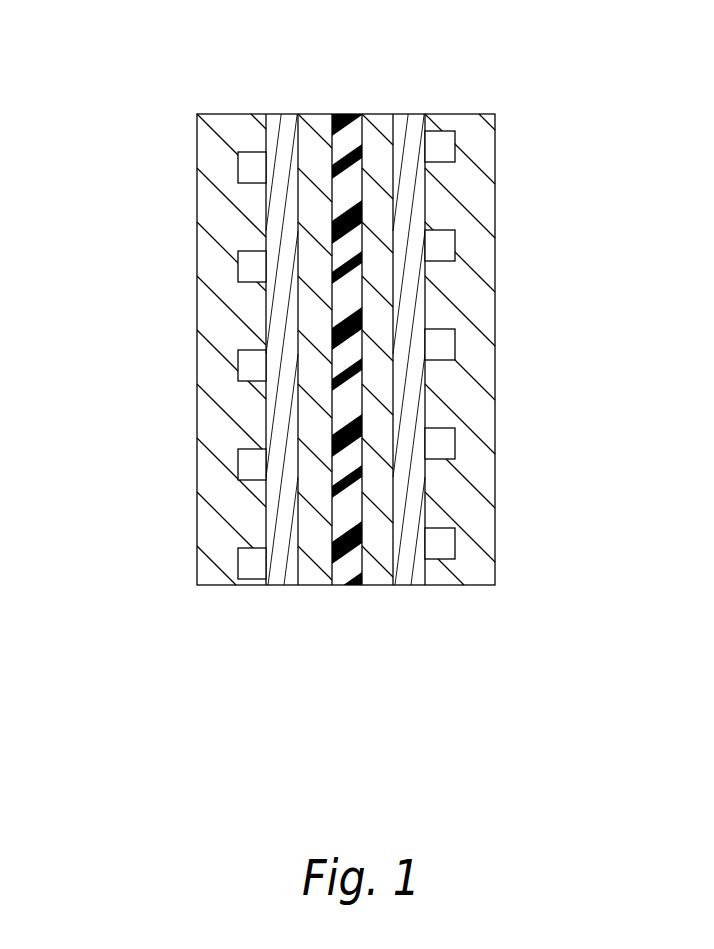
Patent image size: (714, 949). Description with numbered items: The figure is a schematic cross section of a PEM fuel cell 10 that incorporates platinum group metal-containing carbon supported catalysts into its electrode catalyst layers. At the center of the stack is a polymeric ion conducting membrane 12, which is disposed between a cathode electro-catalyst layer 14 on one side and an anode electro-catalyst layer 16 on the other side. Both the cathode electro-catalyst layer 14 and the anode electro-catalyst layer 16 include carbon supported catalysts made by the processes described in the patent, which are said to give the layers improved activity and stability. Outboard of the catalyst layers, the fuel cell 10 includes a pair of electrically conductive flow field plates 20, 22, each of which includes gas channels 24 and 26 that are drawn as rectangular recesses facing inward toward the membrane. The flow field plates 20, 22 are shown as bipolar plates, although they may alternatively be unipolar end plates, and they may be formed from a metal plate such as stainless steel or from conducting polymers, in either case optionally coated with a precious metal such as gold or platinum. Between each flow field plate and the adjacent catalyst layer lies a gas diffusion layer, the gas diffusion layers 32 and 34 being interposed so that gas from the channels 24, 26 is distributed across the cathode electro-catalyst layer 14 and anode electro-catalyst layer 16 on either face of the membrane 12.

The PEM fuel cell 10 is at (132, 120).
The polymeric ion conducting membrane 12 is at (352, 114).
The cathode electro-catalyst layer 14 is at (318, 114).
The anode electro-catalyst layer 16 is at (375, 114).
The flow field plate 20 is at (450, 114).
The flow field plate 22 is at (228, 114).
The gas channel 24 is at (440, 147).
The gas channel 26 is at (248, 263).
The gas diffusion layer 32 is at (410, 114).
The gas diffusion layer 34 is at (288, 114).